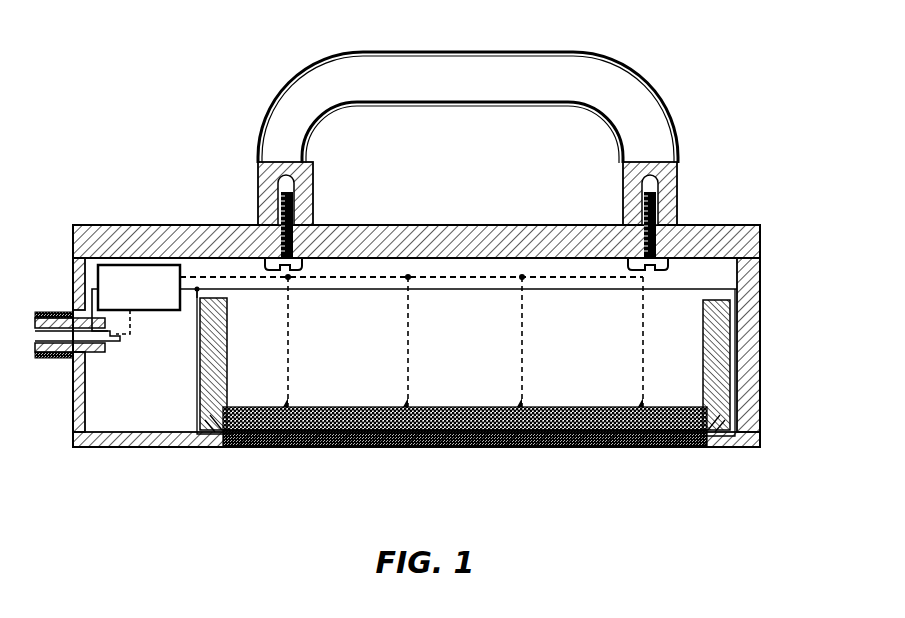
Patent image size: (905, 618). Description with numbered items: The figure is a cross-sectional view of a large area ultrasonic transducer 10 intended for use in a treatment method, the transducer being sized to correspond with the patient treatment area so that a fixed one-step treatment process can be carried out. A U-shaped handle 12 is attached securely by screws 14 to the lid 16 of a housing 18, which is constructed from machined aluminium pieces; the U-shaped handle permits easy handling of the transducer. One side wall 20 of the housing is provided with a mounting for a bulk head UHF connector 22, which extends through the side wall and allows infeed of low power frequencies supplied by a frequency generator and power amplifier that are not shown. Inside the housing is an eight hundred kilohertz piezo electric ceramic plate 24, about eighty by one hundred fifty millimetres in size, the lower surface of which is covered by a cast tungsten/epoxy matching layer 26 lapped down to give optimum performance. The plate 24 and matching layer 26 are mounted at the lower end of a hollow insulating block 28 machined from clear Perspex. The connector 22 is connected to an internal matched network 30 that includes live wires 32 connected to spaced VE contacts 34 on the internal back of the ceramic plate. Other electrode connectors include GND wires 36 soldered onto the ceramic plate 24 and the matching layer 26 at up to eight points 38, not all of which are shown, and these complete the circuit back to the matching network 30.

The transducer 10 is at (178, 93).
The U-shaped handle 12 is at (468, 62).
The screws 14 is at (272, 182).
The lid 16 is at (433, 234).
The housing 18 is at (760, 310).
The side wall 20 is at (73, 246).
The bulk head UHF connector 22 is at (49, 360).
The piezo electric ceramic plate 24 is at (381, 420).
The matching layer 26 is at (504, 440).
The hollow insulating block 28 is at (209, 447).
The matched network 30 is at (133, 263).
The live wires 32 is at (291, 338).
The VE contacts 34 is at (288, 407).
The GND wires 36 is at (470, 290).
The points 38 is at (210, 421).